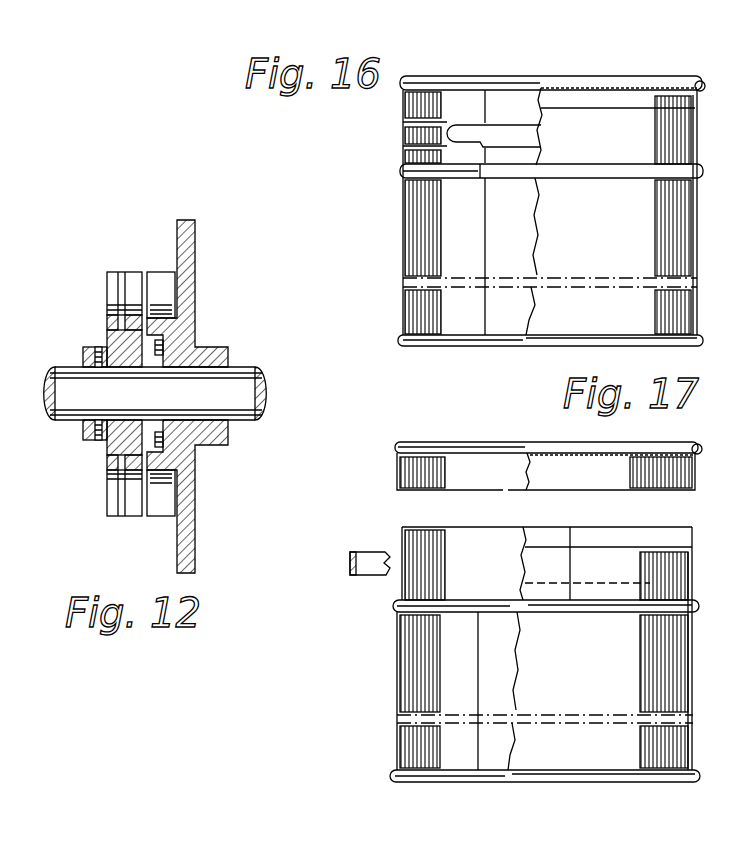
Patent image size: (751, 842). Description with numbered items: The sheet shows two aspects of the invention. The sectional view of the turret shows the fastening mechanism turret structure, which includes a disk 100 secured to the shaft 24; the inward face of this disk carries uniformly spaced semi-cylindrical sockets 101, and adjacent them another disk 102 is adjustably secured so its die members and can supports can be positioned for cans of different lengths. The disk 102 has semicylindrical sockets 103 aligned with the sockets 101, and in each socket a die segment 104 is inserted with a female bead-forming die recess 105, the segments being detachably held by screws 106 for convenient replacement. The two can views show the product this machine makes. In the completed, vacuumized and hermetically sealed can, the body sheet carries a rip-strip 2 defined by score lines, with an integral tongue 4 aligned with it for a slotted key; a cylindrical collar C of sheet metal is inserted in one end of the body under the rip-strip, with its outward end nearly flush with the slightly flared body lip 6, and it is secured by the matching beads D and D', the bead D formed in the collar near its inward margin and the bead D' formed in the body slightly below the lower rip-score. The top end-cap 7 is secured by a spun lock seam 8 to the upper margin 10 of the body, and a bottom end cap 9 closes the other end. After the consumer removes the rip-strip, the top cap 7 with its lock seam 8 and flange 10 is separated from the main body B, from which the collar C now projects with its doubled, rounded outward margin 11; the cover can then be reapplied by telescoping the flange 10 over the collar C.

In FIG. 12, the shaft 24 is at (243, 423).
In FIG. 12, the disk 100 is at (195, 282).
In FIG. 12, the semi-cylindrical sockets 101 is at (161, 273).
In FIG. 12, the disk 102 is at (108, 345).
In FIG. 12, the semicylindrical sockets 103 is at (137, 273).
In FIG. 12, the die segment 104 is at (110, 281).
In FIG. 12, the female bead-forming die recess 105 is at (120, 274).
In FIG. 12, the screws 106 is at (108, 325).
In FIG. 16, the rip-strip 2 is at (403, 135).
In FIG. 17, the rip-strip 2 is at (356, 552).
In FIG. 16, the tongue 4 is at (458, 132).
In FIG. 16, the body lip 6 is at (703, 90).
In FIG. 16, the top end-cap 7 is at (630, 88).
In FIG. 17, the top end-cap 7 is at (538, 455).
In FIG. 16, the lock seam 8 is at (700, 80).
In FIG. 17, the lock seam 8 is at (700, 450).
In FIG. 16, the bottom end cap 9 is at (668, 346).
In FIG. 17, the bottom end cap 9 is at (645, 782).
In FIG. 17, the upper margin 10 is at (700, 477).
In FIG. 17, the outward margin 11 is at (694, 527).
In FIG. 16, the main body B is at (697, 243).
In FIG. 17, the main body B is at (694, 649).
In FIG. 16, the collar C is at (680, 135).
In FIG. 17, the collar C is at (694, 557).
In FIG. 16, the bead D is at (563, 211).
In FIG. 17, the bead D is at (559, 648).
In FIG. 16, the bead D' is at (573, 170).
In FIG. 17, the bead D' is at (569, 598).